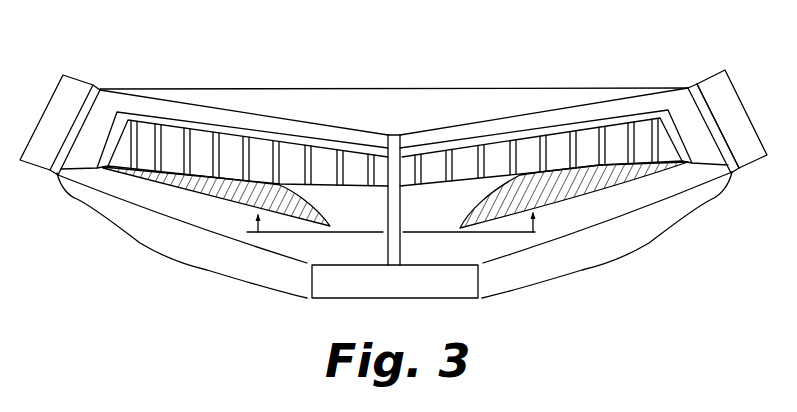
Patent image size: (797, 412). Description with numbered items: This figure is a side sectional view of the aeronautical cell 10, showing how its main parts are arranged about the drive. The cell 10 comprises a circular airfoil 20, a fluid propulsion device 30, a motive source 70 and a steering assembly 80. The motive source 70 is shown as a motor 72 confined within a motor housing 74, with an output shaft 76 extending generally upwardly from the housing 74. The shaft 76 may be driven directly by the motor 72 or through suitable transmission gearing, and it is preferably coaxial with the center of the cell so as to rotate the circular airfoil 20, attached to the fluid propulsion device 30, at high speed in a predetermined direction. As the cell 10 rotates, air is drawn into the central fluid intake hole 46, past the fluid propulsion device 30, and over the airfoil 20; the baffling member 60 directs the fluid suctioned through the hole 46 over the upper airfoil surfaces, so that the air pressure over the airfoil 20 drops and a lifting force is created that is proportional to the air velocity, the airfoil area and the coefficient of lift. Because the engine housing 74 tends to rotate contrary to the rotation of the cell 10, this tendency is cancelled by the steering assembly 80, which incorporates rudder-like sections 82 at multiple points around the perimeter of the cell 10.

The aeronautical cell 10 is at (737, 38).
The circular airfoil 20 is at (182, 197).
The fluid propulsion device 30 is at (153, 142).
The hole 46 is at (460, 231).
The baffling member 60 is at (613, 135).
The motive source 70 is at (328, 282).
The motor 72 is at (388, 293).
The motor housing 74 is at (188, 240).
The output shaft 76 is at (397, 241).
The steering assembly 80 is at (745, 142).
The rudder-like sections 82 is at (63, 103).